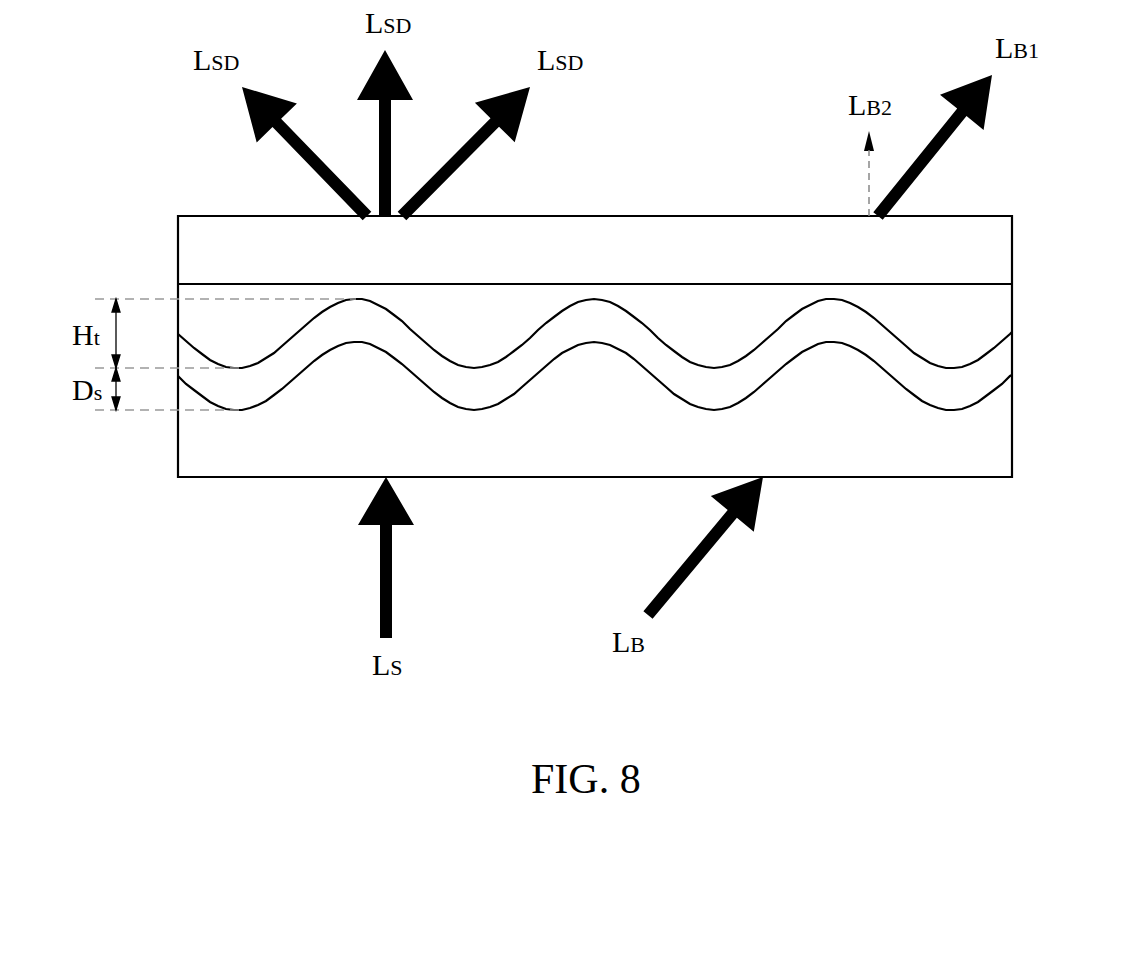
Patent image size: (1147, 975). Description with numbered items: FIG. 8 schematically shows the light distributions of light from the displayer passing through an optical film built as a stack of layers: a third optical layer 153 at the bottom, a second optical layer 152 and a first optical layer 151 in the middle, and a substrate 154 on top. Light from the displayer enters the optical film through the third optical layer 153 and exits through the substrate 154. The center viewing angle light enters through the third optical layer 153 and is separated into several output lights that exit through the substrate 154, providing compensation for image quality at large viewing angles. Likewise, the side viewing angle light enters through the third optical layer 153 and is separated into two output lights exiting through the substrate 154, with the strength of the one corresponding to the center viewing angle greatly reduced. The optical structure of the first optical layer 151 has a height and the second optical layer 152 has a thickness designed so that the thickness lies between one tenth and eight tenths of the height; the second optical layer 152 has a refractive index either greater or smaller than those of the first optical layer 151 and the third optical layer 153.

The first optical layer 151 is at (1013, 319).
The second optical layer 152 is at (1013, 357).
The third optical layer 153 is at (1013, 441).
The substrate 154 is at (1013, 250).